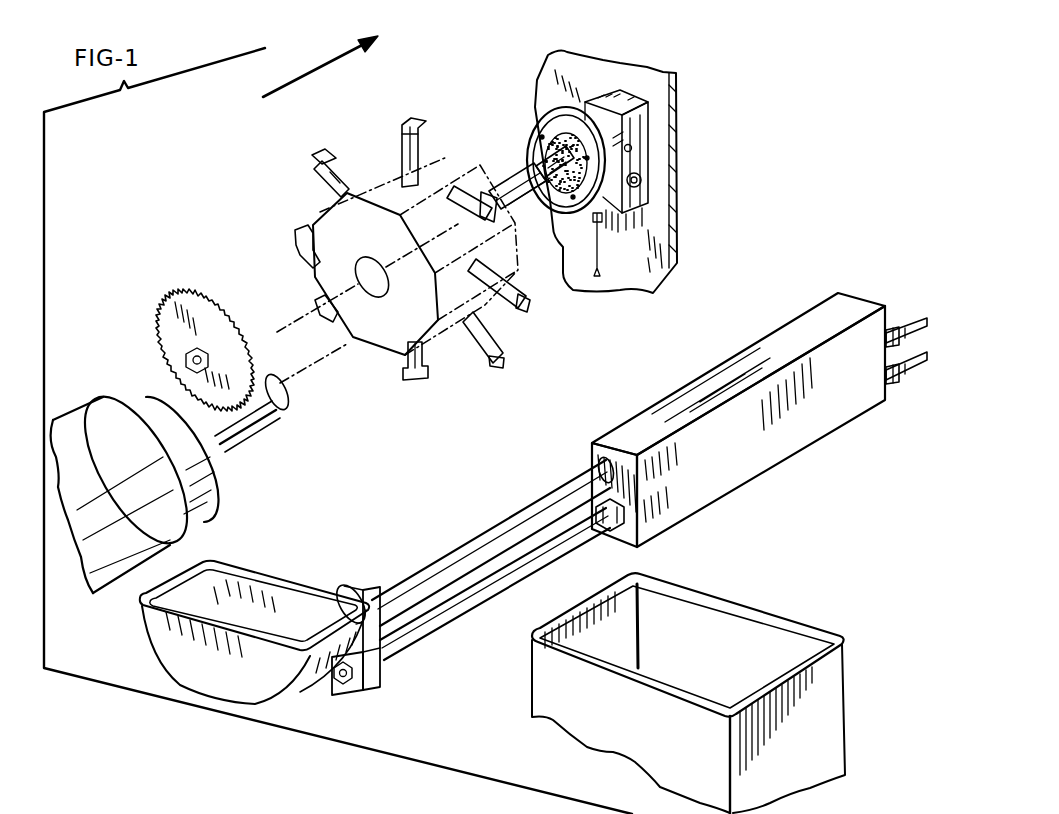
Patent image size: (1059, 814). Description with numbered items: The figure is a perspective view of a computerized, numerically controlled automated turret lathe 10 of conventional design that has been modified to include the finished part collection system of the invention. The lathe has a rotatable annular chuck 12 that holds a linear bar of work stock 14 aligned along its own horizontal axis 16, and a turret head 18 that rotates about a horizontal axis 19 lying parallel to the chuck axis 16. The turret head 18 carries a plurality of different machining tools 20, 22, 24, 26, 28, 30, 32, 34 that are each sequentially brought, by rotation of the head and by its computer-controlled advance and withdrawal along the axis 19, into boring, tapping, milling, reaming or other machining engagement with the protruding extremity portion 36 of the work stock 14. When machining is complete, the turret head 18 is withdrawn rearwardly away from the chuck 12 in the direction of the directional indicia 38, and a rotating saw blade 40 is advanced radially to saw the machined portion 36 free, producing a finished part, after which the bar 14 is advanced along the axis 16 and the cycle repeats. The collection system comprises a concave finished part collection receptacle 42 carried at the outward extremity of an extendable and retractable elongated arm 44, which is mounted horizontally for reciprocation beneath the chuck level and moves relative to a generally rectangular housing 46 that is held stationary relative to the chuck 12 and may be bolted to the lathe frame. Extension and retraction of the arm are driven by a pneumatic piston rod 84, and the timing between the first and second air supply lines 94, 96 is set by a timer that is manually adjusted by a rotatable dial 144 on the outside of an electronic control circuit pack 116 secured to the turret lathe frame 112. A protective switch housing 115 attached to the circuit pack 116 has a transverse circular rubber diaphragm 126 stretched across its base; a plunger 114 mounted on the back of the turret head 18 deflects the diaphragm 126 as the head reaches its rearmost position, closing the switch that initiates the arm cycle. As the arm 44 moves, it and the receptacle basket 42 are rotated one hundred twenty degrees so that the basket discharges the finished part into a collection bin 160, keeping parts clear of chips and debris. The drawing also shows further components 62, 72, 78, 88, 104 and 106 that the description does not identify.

The automated turret lathe 10 is at (432, 66).
The chuck 12 is at (135, 390).
The bar of work stock 14 is at (243, 452).
The horizontal axis 16 is at (294, 378).
The turret head 18 is at (443, 136).
The horizontal axis 19 is at (283, 330).
The machining tool 20 is at (403, 130).
The machining tool 22 is at (494, 228).
The machining tool 24 is at (515, 308).
The machining tool 26 is at (502, 358).
The machining tool 28 is at (428, 350).
The machining tool 30 is at (333, 322).
The machining tool 32 is at (292, 242).
The machining tool 34 is at (318, 156).
The portion of the bar of work stock 36 is at (280, 406).
The directional indicia 38 is at (320, 60).
The saw blade 40 is at (167, 300).
The finished part collection receptacle 42 is at (285, 575).
The elongated arm 44 is at (484, 520).
The housing 46 is at (752, 356).
The shaft 62 is at (527, 511).
The bracket 72 is at (374, 665).
The clamp 78 is at (360, 588).
The piston rod 84 is at (455, 612).
The nut 88 is at (338, 680).
The first air supply line 94 is at (906, 324).
The second air supply line 96 is at (916, 364).
The nut 104 is at (633, 533).
The bore 106 is at (645, 484).
The turret lathe frame 112 is at (648, 262).
The plunger 114 is at (505, 180).
The protective housing 115 is at (636, 144).
The electronic control circuit pack 116 is at (655, 157).
The rubber diaphragm 126 is at (540, 134).
The rotatable dial 144 is at (641, 182).
The collection bin 160 is at (825, 710).